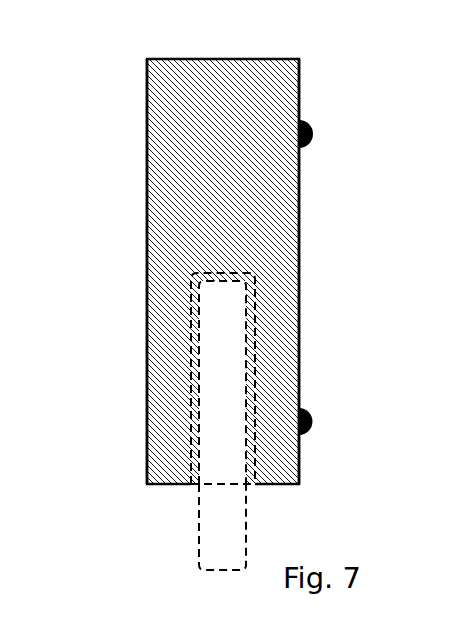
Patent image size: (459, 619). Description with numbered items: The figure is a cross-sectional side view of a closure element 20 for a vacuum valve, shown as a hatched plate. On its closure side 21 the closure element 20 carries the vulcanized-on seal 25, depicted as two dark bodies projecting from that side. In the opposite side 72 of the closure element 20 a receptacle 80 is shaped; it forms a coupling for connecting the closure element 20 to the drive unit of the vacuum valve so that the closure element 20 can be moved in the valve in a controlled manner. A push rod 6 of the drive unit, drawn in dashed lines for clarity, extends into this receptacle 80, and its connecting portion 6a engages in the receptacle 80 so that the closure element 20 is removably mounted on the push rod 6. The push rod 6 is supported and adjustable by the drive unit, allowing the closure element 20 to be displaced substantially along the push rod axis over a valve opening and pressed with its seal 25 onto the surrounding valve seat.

The closure element 20 is at (165, 98).
The side 72 is at (148, 227).
The closure side 21 is at (300, 207).
The seal 25 is at (312, 130).
The connecting portion 6a is at (237, 385).
The receptacle 80 is at (208, 465).
The push rod 6 is at (247, 548).